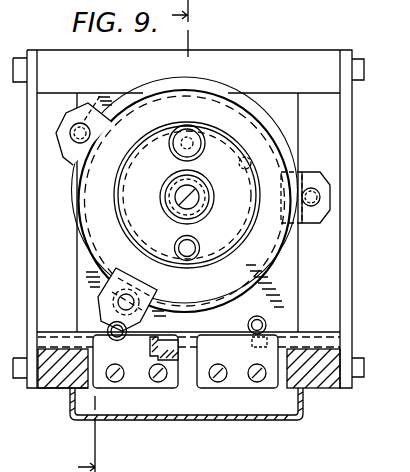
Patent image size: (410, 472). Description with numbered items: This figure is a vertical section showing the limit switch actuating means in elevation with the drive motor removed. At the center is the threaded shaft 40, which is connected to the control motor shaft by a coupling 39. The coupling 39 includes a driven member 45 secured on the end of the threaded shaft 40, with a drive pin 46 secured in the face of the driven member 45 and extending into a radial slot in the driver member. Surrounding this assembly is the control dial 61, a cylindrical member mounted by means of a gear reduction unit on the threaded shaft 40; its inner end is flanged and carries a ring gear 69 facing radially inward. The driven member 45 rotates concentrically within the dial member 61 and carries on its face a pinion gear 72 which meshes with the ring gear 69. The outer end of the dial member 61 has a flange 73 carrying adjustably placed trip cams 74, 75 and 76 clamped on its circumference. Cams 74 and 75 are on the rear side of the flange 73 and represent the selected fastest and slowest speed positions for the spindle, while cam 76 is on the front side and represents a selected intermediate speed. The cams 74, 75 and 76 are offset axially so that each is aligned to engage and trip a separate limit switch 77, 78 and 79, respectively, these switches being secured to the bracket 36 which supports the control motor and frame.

The bracket 36 is at (50, 386).
The coupling 39 is at (133, 189).
The threaded shaft 40 is at (209, 200).
The driven member 45 is at (231, 158).
The drive pin 46 is at (176, 245).
The control dial 61 is at (142, 86).
The ring gear 69 is at (250, 166).
The pinion gear 72 is at (173, 153).
The flange 73 is at (227, 88).
The trip cam 74 is at (309, 172).
The trip cam 75 is at (61, 150).
The trip cam 76 is at (100, 298).
The limit switch 77 is at (272, 345).
The limit switch 78 is at (168, 351).
The limit switch 79 is at (135, 378).